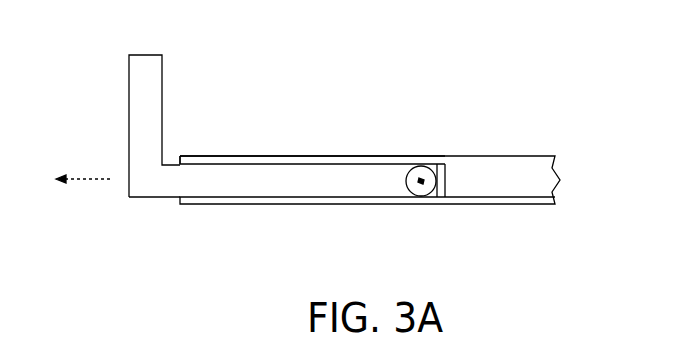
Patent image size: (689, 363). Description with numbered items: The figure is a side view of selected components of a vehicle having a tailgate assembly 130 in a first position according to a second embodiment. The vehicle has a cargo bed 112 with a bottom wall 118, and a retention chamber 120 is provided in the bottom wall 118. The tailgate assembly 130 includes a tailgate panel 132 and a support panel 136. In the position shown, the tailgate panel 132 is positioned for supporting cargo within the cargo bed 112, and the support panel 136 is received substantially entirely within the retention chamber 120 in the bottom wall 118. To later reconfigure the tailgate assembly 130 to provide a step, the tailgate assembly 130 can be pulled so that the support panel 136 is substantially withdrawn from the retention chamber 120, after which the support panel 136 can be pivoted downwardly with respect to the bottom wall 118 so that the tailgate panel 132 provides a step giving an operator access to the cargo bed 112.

The cargo bed 112 is at (442, 103).
The bottom wall 118 is at (523, 157).
The retention chamber 120 is at (451, 194).
The tailgate assembly 130 is at (108, 197).
The tailgate panel 132 is at (131, 111).
The support panel 136 is at (305, 157).